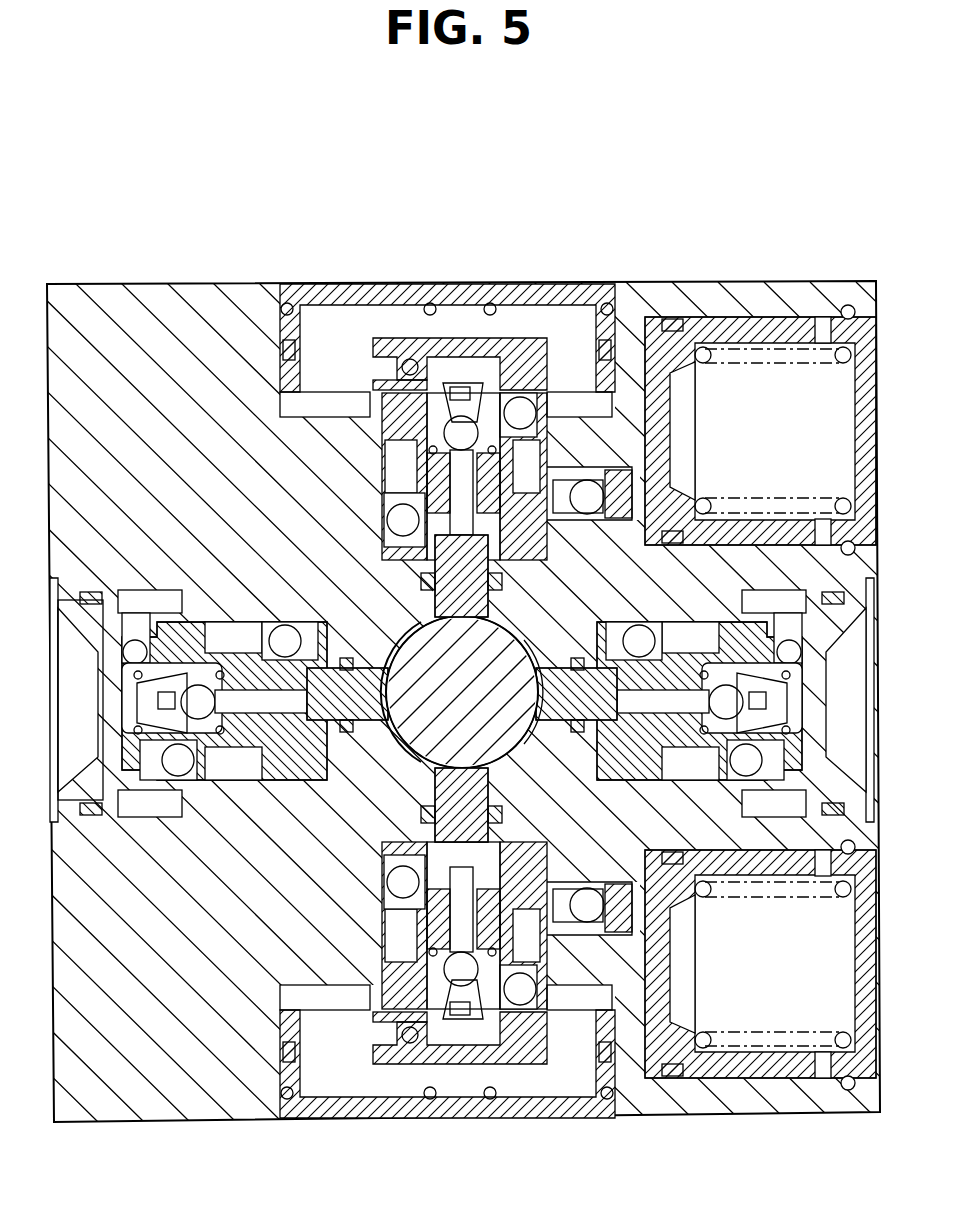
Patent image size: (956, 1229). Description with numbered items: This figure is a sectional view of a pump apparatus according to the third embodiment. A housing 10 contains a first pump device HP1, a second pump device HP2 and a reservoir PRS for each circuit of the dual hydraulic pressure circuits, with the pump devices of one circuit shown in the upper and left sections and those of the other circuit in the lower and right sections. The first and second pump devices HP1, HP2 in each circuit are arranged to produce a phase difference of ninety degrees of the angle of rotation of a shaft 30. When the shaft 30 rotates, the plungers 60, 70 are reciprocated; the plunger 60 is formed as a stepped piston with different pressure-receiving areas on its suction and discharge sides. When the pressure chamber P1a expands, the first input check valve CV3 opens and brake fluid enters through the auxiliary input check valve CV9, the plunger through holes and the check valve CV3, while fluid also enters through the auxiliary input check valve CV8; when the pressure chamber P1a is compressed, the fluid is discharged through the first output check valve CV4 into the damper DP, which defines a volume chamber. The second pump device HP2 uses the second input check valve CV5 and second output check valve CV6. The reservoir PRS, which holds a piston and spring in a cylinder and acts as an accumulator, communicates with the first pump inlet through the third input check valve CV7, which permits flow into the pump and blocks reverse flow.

The housing 10 is at (697, 1105).
The shaft 30 is at (442, 728).
The plunger 60 is at (462, 597).
The plunger 70 is at (237, 732).
The first input check valve CV3 is at (455, 392).
The first output check valve CV4 is at (405, 360).
The second input check valve CV5 is at (196, 690).
The second output check valve CV6 is at (88, 590).
The third input check valve CV7 is at (598, 478).
The auxiliary input check valve CV8 is at (540, 345).
The auxiliary input check valve CV9 is at (382, 490).
The pressure chamber P1a is at (461, 428).
The damper DP is at (533, 320).
The reservoir PRS is at (742, 322).
The first pump device HP1 is at (597, 277).
The second pump device HP2 is at (116, 277).